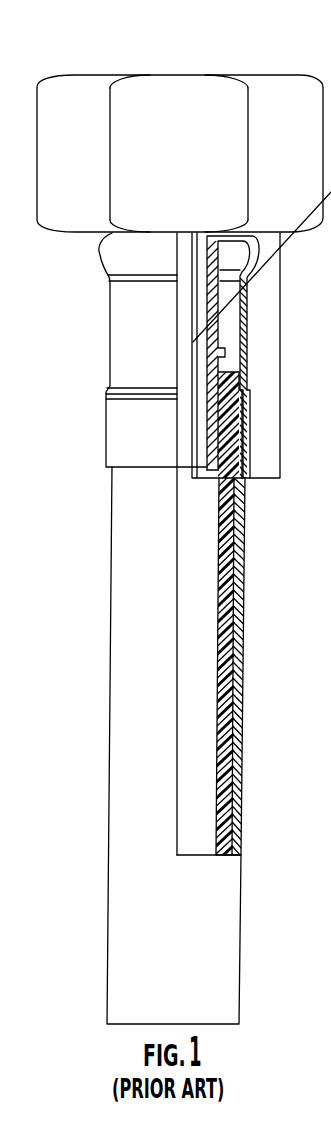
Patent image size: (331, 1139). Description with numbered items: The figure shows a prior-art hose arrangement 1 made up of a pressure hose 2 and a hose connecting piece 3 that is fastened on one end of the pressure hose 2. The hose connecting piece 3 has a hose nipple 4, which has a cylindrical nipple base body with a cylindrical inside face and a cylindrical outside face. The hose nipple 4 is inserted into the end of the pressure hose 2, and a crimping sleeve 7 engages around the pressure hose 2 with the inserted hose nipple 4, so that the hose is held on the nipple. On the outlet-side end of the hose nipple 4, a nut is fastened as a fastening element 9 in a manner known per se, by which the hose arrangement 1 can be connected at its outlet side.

The hose arrangement 1 is at (62, 554).
The pressure hose 2 is at (125, 673).
The hose connecting piece 3 is at (51, 274).
The hose nipple 4 is at (213, 340).
The crimping sleeve 7 is at (118, 432).
The fastening element 9 is at (68, 108).